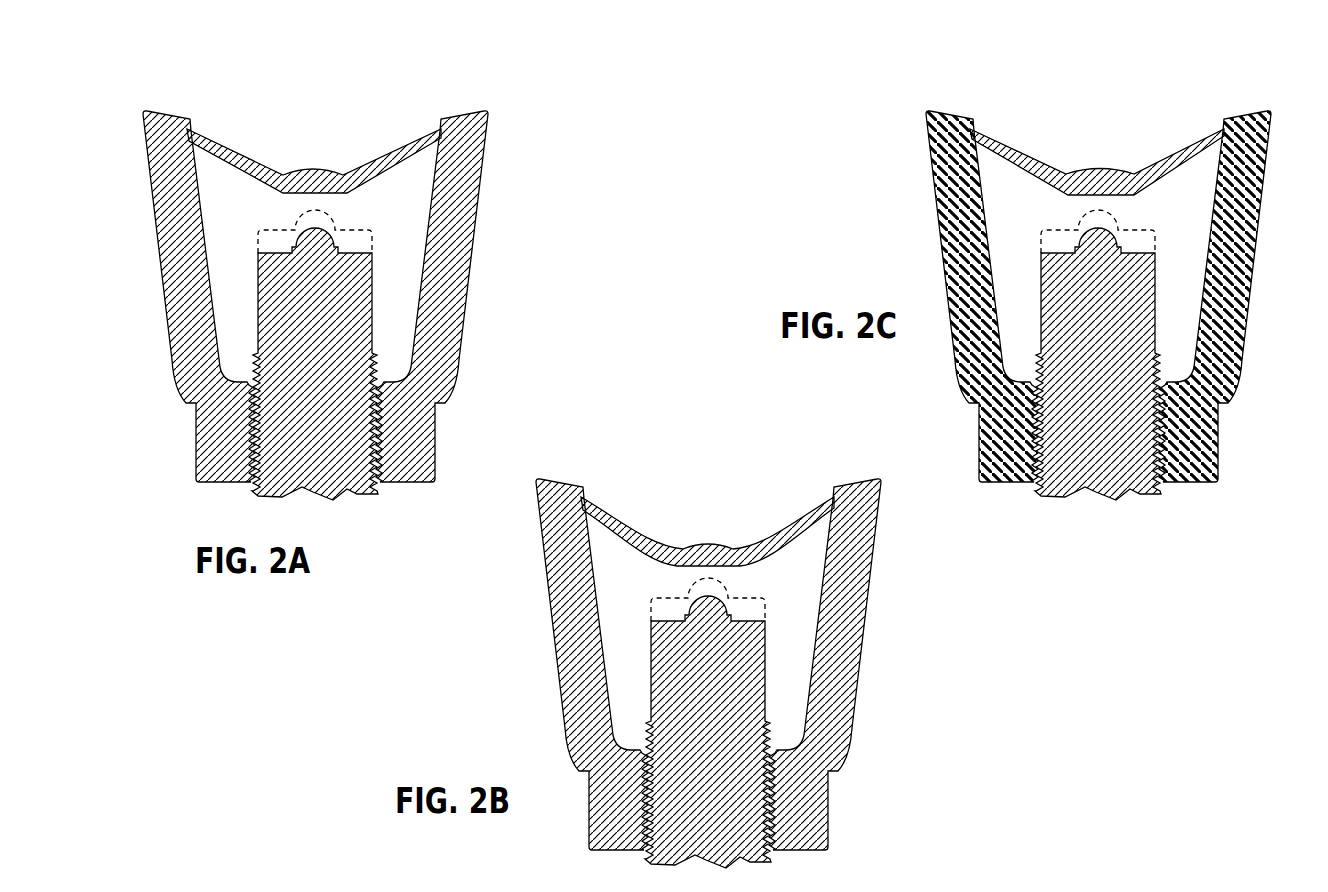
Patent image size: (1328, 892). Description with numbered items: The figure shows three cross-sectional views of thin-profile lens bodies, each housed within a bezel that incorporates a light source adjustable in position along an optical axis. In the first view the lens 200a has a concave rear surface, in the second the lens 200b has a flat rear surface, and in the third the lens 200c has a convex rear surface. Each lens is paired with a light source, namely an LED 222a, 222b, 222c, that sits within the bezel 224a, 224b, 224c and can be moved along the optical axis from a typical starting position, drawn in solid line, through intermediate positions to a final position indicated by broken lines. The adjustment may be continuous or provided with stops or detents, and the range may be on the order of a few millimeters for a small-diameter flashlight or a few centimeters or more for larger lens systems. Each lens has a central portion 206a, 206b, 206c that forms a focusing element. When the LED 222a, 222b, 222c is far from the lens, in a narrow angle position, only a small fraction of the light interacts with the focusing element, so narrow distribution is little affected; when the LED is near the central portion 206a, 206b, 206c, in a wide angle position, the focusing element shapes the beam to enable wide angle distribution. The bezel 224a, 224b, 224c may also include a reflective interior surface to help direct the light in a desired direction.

In FIG. 2A, the lens 200a is at (376, 277).
In FIG. 2A, the central portion 206a is at (315, 170).
In FIG. 2A, the LED 222a is at (314, 233).
In FIG. 2A, the bezel 224a is at (483, 153).
In FIG. 2B, the lens 200b is at (782, 645).
In FIG. 2B, the central portion 206b is at (708, 540).
In FIG. 2B, the LED 222b is at (716, 606).
In FIG. 2B, the bezel 224b is at (866, 552).
In FIG. 2C, the lens 200c is at (1036, 276).
In FIG. 2C, the central portion 206c is at (1095, 170).
In FIG. 2C, the LED 222c is at (1094, 237).
In FIG. 2C, the bezel 224c is at (930, 143).